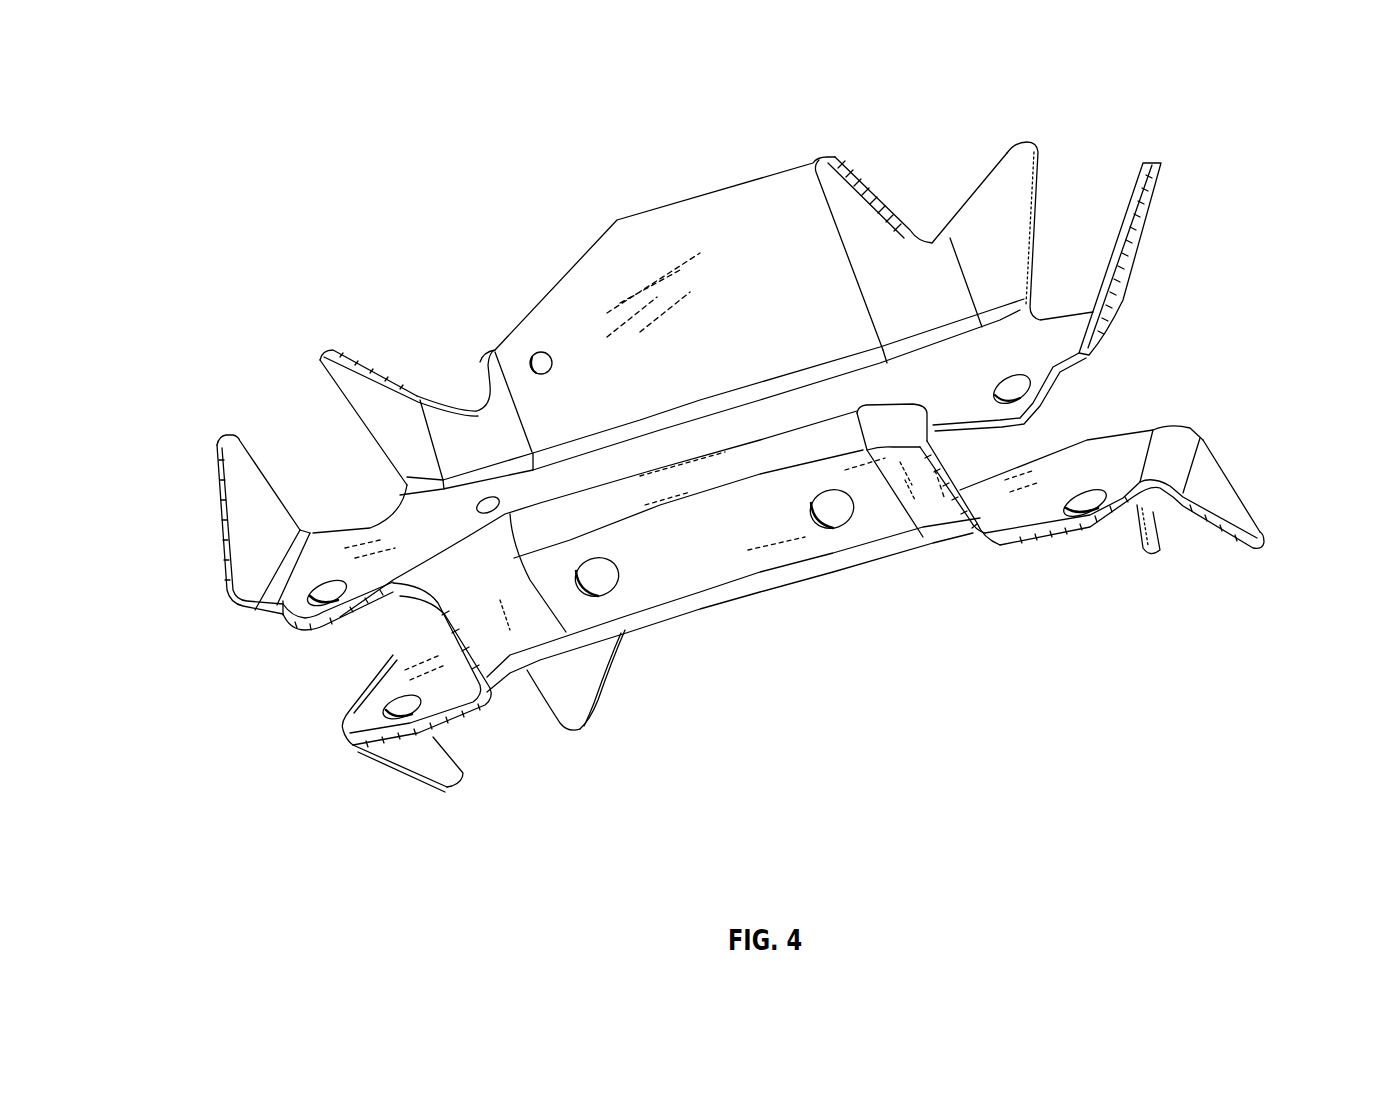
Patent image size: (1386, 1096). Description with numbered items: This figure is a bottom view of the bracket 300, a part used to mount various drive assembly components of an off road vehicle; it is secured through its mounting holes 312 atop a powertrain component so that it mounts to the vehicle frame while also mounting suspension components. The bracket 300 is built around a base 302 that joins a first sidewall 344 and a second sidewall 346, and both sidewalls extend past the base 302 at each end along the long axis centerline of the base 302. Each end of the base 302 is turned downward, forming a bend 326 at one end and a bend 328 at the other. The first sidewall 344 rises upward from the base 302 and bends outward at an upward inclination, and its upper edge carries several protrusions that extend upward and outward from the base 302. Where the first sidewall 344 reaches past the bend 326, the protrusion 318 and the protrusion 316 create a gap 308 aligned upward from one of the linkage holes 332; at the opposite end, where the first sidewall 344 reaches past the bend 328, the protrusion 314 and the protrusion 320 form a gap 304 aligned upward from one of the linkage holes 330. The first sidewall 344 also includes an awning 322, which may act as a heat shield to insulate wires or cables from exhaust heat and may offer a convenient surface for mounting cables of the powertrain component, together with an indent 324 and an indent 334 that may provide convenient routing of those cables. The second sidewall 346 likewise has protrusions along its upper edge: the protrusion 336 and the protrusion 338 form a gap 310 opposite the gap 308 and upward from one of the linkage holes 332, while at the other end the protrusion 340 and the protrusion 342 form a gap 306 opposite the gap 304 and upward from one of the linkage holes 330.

The bracket 300 is at (1289, 85).
The base 302 is at (762, 544).
The gap 304 is at (308, 442).
The gap 306 is at (500, 735).
The gap 308 is at (1085, 195).
The gap 310 is at (1186, 518).
The mounting holes 312 is at (617, 580).
The protrusion 314 is at (345, 373).
The protrusion 316 is at (1018, 160).
The protrusion 318 is at (1140, 200).
The protrusion 320 is at (230, 463).
The awning 322 is at (610, 242).
The indent 324 is at (925, 190).
The bend 326 is at (943, 510).
The bend 328 is at (511, 617).
The linkage holes 330 is at (383, 716).
The linkage holes 332 is at (1062, 502).
The indent 334 is at (462, 370).
The protrusion 336 is at (1247, 503).
The protrusion 338 is at (1140, 537).
The protrusion 340 is at (572, 687).
The protrusion 342 is at (460, 770).
The first sidewall 344 is at (424, 544).
The second sidewall 346 is at (1070, 462).